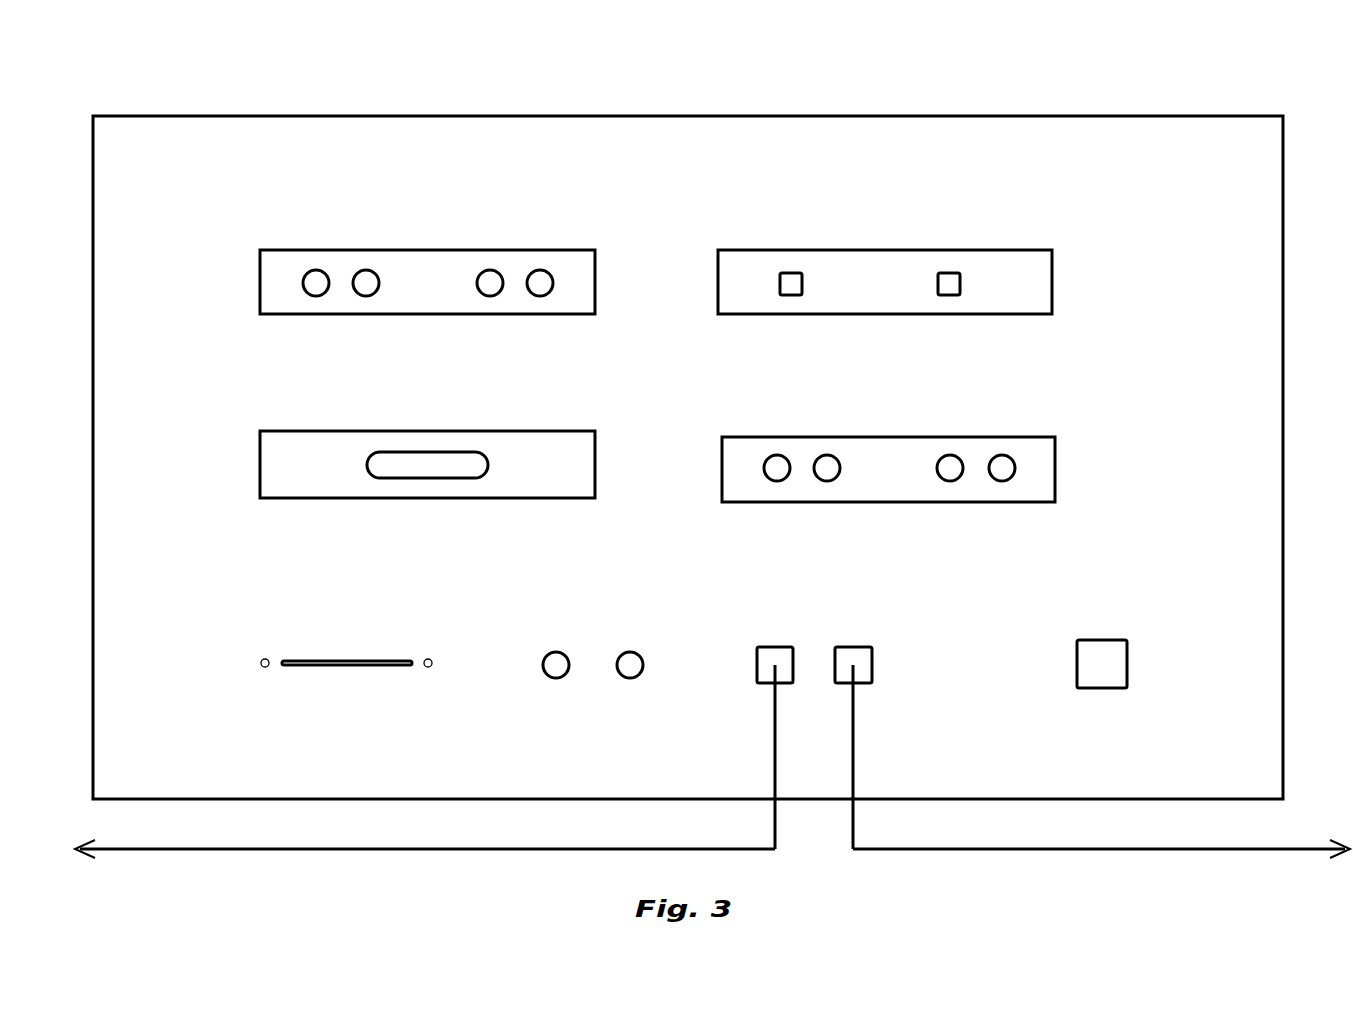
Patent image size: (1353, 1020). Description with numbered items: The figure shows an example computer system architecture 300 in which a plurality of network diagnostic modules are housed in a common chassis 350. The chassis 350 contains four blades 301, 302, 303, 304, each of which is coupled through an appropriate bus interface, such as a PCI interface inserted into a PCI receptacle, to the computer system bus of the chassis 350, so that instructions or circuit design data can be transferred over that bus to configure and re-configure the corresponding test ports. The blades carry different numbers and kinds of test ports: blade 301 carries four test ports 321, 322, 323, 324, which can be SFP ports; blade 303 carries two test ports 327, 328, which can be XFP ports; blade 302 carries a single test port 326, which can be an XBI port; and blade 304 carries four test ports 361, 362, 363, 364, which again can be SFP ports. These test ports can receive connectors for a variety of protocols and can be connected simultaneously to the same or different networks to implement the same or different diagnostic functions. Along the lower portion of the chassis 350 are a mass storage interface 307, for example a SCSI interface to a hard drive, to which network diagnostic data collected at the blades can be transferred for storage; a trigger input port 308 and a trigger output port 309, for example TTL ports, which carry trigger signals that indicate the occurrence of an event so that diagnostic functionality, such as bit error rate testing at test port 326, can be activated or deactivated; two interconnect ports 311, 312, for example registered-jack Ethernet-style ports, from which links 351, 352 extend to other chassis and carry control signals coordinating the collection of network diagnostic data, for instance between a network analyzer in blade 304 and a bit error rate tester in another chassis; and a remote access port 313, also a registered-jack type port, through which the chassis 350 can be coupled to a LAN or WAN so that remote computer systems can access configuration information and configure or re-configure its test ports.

The computer system architecture 300 is at (785, 88).
The chassis 350 is at (264, 154).
The blade 301 is at (260, 288).
The blade 302 is at (260, 460).
The blade 303 is at (1052, 283).
The blade 304 is at (1055, 480).
The test port 321 is at (314, 270).
The test port 322 is at (365, 270).
The test port 323 is at (488, 270).
The test port 324 is at (538, 270).
The test port 326 is at (398, 452).
The test port 327 is at (789, 273).
The test port 328 is at (947, 273).
The test port 361 is at (775, 455).
The test port 362 is at (826, 455).
The test port 363 is at (948, 455).
The test port 364 is at (1000, 455).
The mass storage interface 307 is at (345, 666).
The trigger input port 308 is at (556, 652).
The trigger output port 309 is at (630, 652).
The interconnect port 311 is at (786, 648).
The interconnect port 312 is at (872, 666).
The remote access port 313 is at (1120, 647).
The link 351 is at (290, 849).
The link 352 is at (1077, 849).